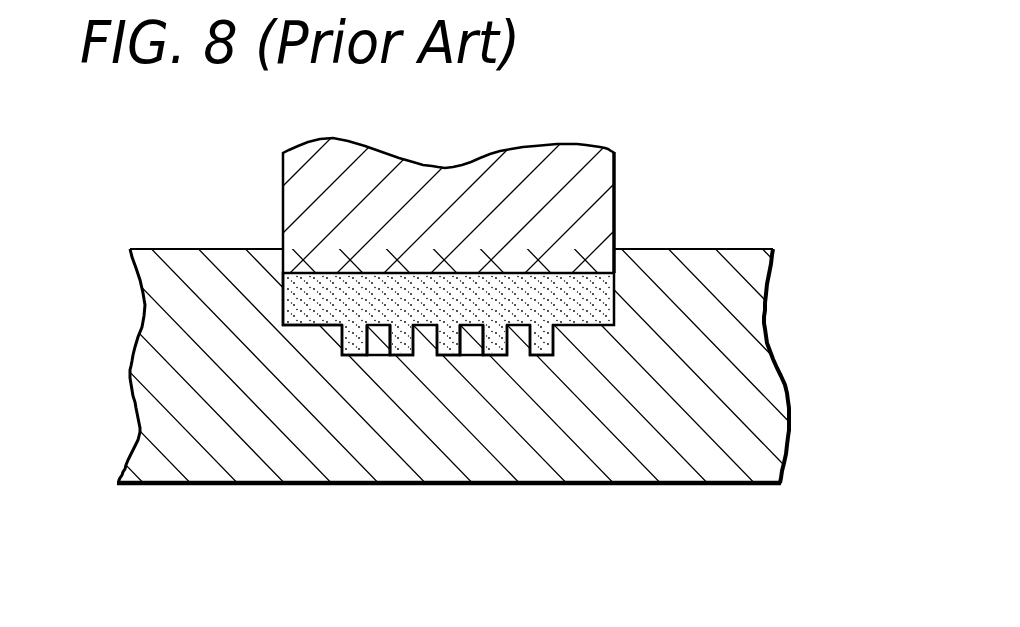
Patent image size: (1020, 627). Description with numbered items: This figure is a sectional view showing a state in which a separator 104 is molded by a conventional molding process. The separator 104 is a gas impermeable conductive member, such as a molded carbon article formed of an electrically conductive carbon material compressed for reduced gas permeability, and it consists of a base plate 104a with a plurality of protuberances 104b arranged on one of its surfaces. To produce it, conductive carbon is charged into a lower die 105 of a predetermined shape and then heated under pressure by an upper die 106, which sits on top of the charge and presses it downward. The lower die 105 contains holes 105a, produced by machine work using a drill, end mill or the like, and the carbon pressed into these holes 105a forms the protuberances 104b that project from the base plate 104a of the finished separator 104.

The separator 104 is at (613, 313).
The base plate 104a is at (290, 303).
The protuberances 104b is at (557, 347).
The lower die 105 is at (492, 483).
The holes 105a is at (352, 355).
The upper die 106 is at (617, 203).